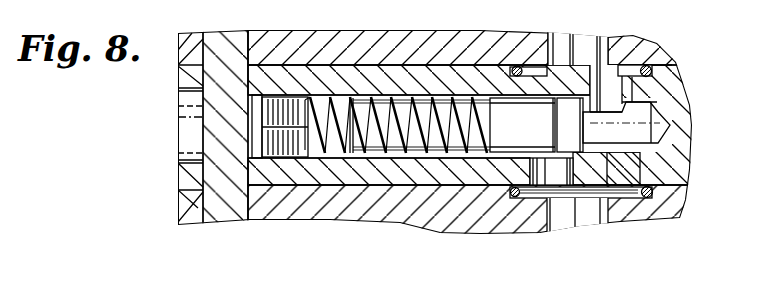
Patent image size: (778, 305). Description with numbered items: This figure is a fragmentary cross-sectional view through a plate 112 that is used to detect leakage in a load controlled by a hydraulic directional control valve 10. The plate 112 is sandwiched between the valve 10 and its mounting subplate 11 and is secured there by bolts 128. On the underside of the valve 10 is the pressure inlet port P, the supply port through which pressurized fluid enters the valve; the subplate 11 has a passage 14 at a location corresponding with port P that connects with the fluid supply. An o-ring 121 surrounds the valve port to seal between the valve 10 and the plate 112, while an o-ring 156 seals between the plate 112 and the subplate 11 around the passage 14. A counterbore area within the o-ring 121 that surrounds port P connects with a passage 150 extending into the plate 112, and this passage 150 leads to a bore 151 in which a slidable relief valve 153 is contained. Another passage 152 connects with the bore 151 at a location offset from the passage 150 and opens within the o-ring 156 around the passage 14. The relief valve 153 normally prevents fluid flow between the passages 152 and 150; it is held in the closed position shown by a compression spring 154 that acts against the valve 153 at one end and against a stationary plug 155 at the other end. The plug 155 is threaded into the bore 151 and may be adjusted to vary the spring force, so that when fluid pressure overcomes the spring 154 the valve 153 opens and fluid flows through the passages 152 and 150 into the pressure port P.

The hydraulic directional control valve 10 is at (437, 220).
The mounting subplate 11 is at (410, 37).
The passage 14 is at (582, 43).
The plate 112 is at (682, 113).
The o-ring 121 is at (637, 198).
The bolt 128 is at (237, 42).
The passage 150 is at (560, 165).
The bore 151 is at (628, 145).
The passage 152 is at (623, 88).
The relief valve 153 is at (536, 125).
The compression spring 154 is at (367, 157).
The plug 155 is at (290, 152).
The o-ring 156 is at (648, 65).
The pressure inlet port P is at (585, 225).